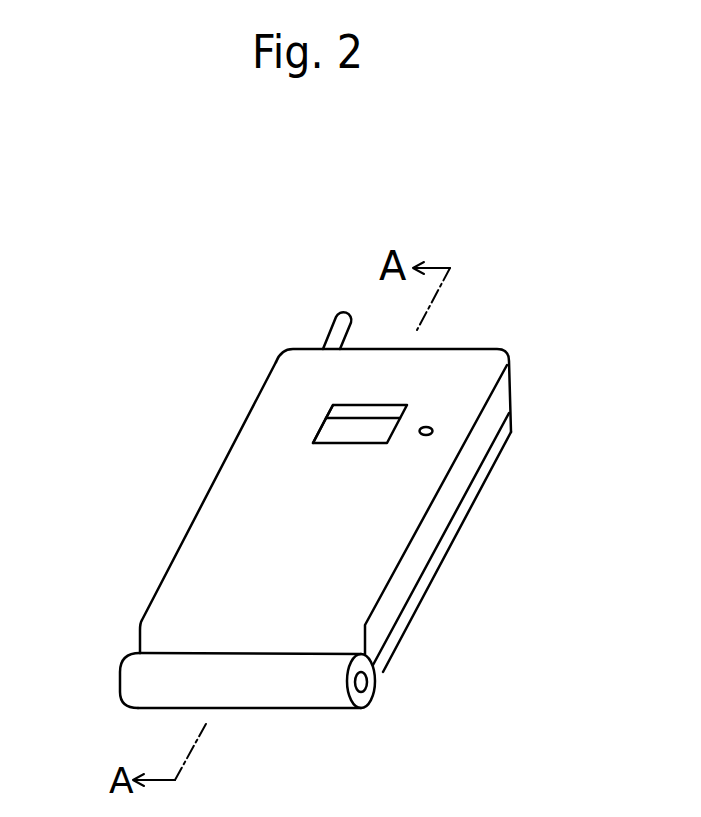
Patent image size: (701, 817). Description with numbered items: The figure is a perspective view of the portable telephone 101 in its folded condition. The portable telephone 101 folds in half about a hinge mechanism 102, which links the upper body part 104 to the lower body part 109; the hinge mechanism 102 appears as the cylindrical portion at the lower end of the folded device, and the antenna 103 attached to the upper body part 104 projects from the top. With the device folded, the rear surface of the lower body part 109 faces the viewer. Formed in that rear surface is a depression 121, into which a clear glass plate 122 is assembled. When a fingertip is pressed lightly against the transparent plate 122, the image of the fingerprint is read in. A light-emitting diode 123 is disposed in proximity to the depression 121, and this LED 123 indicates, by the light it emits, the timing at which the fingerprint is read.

The portable telephone 101 is at (186, 443).
The hinge mechanism 102 is at (367, 682).
The antenna 103 is at (328, 334).
The upper body part 104 is at (483, 480).
The lower body part 109 is at (500, 399).
The depression 121 is at (402, 384).
The clear glass plate 122 is at (333, 430).
The light-emitting diode (LED) 123 is at (423, 437).